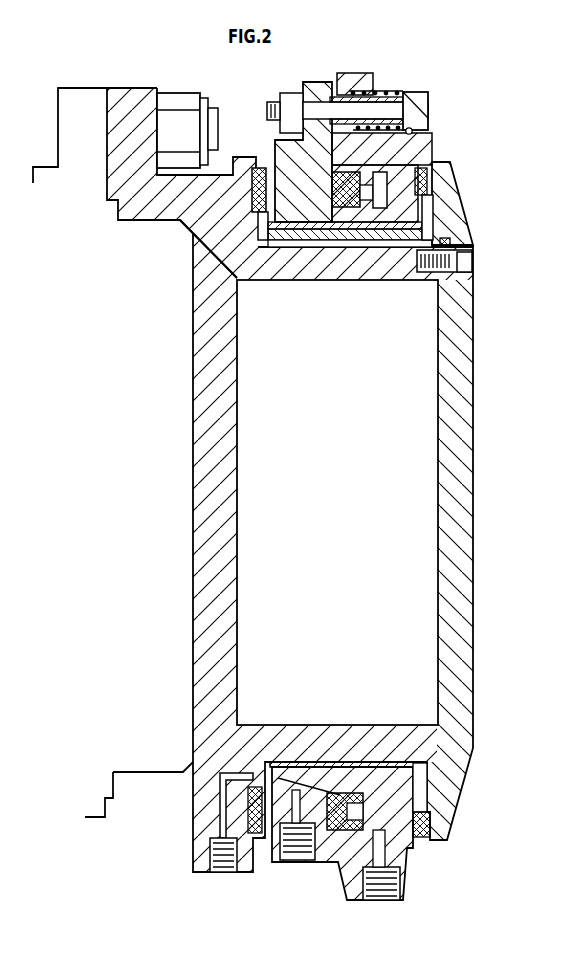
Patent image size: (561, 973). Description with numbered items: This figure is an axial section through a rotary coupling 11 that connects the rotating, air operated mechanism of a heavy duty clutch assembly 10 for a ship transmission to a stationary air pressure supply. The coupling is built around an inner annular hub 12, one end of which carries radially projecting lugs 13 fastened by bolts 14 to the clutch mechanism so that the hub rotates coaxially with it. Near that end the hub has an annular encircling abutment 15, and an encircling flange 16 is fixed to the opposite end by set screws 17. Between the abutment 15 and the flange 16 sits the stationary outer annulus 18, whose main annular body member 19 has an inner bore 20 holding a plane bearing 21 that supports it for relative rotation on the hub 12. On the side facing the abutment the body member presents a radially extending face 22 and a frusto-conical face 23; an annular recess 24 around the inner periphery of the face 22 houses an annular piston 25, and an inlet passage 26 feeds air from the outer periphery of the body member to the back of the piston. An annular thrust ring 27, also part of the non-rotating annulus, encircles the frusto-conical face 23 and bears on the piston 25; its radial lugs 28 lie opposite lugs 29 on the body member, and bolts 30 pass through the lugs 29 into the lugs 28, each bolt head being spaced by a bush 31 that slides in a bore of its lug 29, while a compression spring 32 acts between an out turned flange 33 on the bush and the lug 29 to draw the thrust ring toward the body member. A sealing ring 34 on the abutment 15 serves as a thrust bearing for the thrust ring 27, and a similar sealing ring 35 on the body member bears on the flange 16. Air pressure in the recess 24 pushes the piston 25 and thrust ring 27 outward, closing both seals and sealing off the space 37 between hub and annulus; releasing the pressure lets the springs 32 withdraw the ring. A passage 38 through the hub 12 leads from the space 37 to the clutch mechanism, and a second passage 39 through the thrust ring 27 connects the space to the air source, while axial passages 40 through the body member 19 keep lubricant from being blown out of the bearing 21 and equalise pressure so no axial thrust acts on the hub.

The heavy duty clutch assembly 10 is at (60, 97).
The rotary coupling 11 is at (320, 66).
The inner annular hub 12 is at (292, 268).
The lugs 13 is at (118, 96).
The bolts 14 is at (215, 107).
The annular encircling abutment 15 is at (233, 157).
The encircling flange 16 is at (458, 222).
The set screws 17 is at (470, 262).
The outer annulus 18 is at (384, 65).
The main annular body member 19 is at (336, 154).
The inner bore 20 is at (325, 247).
The plane bearing 21 is at (360, 250).
The radially extending face 22 is at (415, 154).
The frusto-conical face 23 is at (262, 168).
The annular recess 24 is at (415, 190).
The annular piston 25 is at (433, 242).
The inlet passage 26 is at (396, 886).
The annular thrust ring 27 is at (262, 247).
The radial lugs 28 is at (318, 88).
The radially projecting lugs 29 is at (356, 78).
The bolts 30 is at (428, 103).
The bush 31 is at (394, 92).
The compression spring 32 is at (412, 133).
The out turned flange 33 is at (412, 97).
The sealing ring 34 is at (252, 200).
The sealing ring 35 is at (417, 176).
The space 37 is at (273, 769).
The passage 38 is at (216, 865).
The second passage 39 is at (308, 852).
The axial passages 40 is at (386, 248).